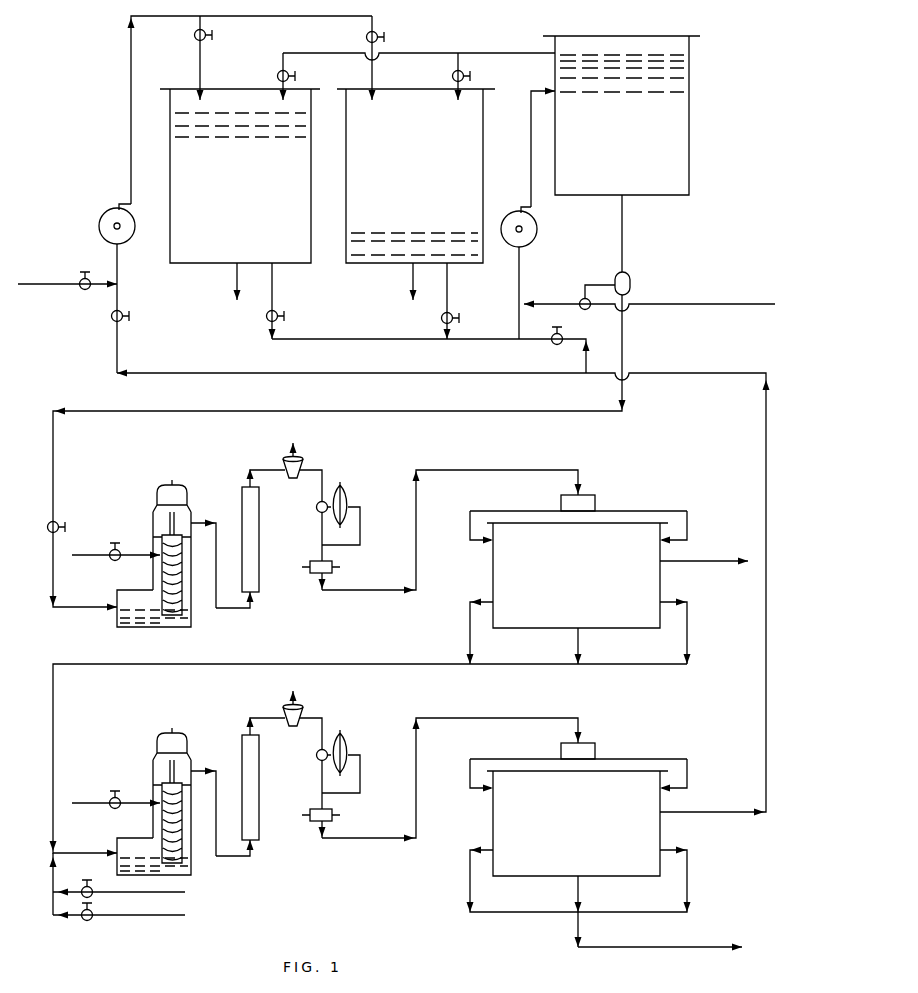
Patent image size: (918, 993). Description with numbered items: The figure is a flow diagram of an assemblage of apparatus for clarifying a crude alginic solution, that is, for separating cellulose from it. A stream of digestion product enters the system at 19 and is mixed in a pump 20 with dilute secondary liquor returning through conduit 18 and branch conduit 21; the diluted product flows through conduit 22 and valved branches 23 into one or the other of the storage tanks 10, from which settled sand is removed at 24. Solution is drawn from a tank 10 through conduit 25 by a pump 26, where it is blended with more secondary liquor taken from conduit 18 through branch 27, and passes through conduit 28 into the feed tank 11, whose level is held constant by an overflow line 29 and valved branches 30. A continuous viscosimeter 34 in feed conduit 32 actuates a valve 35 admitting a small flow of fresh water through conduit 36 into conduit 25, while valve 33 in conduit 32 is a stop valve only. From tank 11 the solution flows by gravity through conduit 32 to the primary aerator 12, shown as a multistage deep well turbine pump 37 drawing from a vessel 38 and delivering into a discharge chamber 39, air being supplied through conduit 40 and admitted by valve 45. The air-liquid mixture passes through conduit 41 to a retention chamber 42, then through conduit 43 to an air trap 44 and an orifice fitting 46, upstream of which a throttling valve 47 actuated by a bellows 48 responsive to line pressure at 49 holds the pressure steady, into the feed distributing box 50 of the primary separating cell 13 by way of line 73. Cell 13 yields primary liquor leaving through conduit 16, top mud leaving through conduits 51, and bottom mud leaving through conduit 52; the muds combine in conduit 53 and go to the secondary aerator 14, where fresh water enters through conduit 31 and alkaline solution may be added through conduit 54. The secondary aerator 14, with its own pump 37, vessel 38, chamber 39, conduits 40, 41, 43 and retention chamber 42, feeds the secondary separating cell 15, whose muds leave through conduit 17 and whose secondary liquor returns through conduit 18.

The storage tank 10 is at (204, 266).
The feed tank 11 is at (667, 199).
The primary aerator 12 is at (198, 468).
The primary separating cell 13 is at (492, 563).
The secondary aerator 14 is at (175, 782).
The secondary separating cell 15 is at (492, 811).
The conduit 16 is at (722, 558).
The conduit 17 is at (640, 945).
The conduit 18 is at (695, 377).
The system entry 19 is at (50, 280).
The pump 20 is at (106, 218).
The branch conduit 21 is at (118, 345).
The conduit 22 is at (130, 117).
The valved branch 23 is at (197, 64).
The sand removal outlet 24 is at (236, 282).
The conduit 25 is at (273, 290).
The pump 26 is at (520, 207).
The branch 27 is at (552, 346).
The conduit 28 is at (530, 115).
The overflow line 29 is at (512, 54).
The valved branch 30 is at (281, 68).
The conduit 31 is at (148, 895).
The feed conduit 32 is at (626, 237).
The valve 33 is at (60, 525).
The continuous viscosimeter 34 is at (632, 284).
The valve 35 is at (584, 297).
The conduit 36 is at (720, 307).
The multistage deep well turbine pump 37 is at (160, 537).
The vessel 38 is at (120, 622).
The discharge chamber 39 is at (186, 523).
The conduit 40 is at (94, 556).
The conduit 41 is at (240, 610).
The retention chamber 42 is at (259, 555).
The conduit 43 is at (271, 468).
The air trap 44 is at (298, 465).
The valve 45 is at (113, 561).
The fitting 46 is at (325, 577).
The throttling valve 47 is at (316, 510).
The diaphragm or bellows 48 is at (345, 503).
The pressure connection 49 is at (360, 518).
The feed distributing box 50 is at (595, 505).
The conduit 51 is at (468, 622).
The conduit 52 is at (579, 648).
The conduit 53 is at (308, 662).
The conduit 54 is at (148, 918).
The line 73 is at (518, 509).